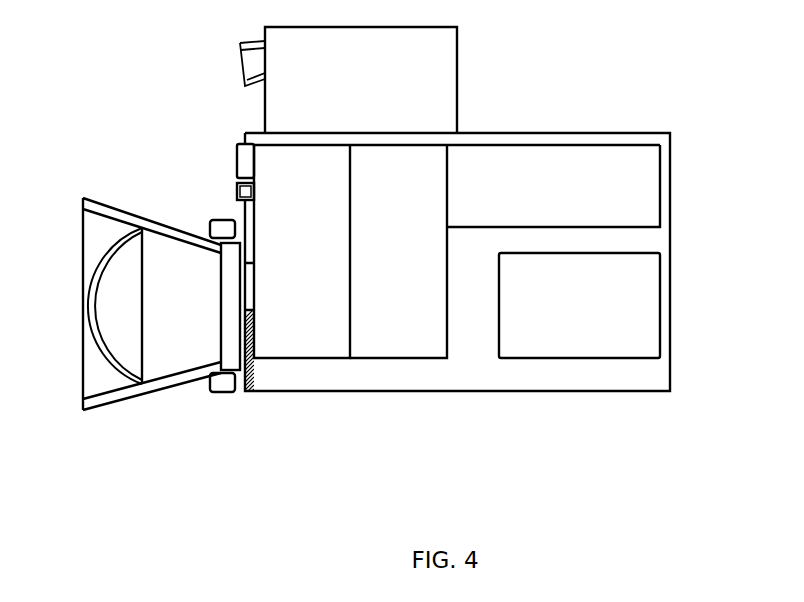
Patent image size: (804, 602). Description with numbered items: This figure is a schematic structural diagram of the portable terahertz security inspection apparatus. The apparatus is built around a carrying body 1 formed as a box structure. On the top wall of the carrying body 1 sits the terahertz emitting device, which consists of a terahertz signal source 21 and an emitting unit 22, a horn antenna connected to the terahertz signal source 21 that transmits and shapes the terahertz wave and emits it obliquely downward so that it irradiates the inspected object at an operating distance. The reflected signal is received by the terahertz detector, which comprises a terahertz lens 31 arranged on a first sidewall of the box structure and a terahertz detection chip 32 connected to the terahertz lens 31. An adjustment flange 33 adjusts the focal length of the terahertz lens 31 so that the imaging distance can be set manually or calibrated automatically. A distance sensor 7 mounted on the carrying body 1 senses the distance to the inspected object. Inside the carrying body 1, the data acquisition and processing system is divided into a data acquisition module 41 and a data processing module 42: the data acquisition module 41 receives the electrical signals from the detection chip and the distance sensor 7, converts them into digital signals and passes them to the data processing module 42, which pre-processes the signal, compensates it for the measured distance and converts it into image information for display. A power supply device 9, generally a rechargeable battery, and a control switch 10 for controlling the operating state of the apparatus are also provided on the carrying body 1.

The carrying body 1 is at (635, 380).
The distance sensor 7 is at (238, 170).
The power supply device 9 is at (638, 302).
The control switch 10 is at (642, 193).
The terahertz signal source 21 is at (425, 88).
The emitting unit 22 is at (258, 63).
The terahertz lens 31 is at (132, 214).
The terahertz detection chip 32 is at (221, 389).
The adjustment flange 33 is at (248, 392).
The data acquisition module 41 is at (305, 345).
The data processing module 42 is at (396, 345).